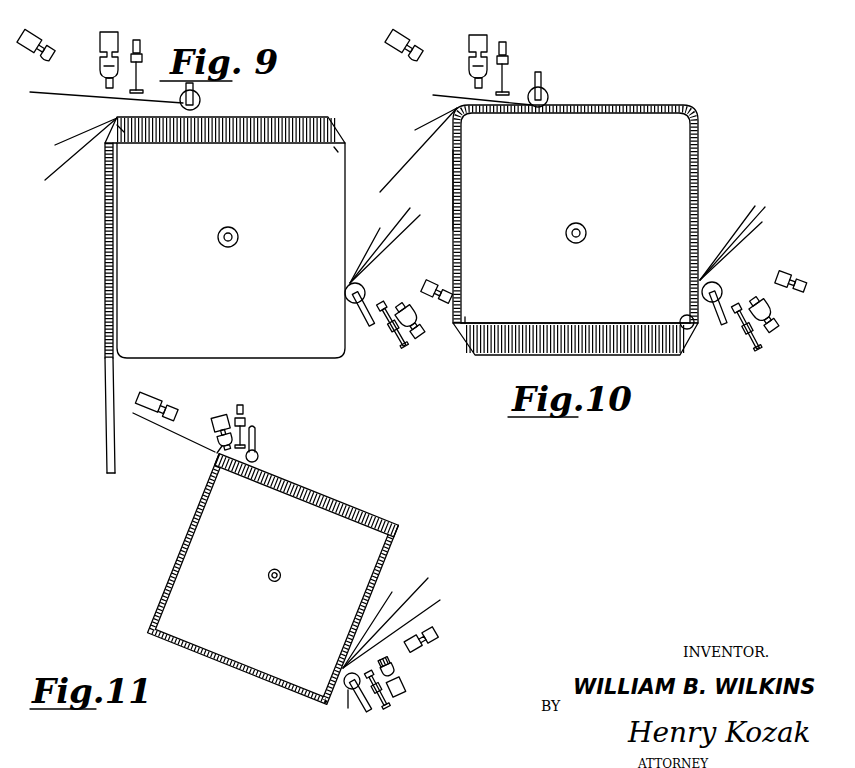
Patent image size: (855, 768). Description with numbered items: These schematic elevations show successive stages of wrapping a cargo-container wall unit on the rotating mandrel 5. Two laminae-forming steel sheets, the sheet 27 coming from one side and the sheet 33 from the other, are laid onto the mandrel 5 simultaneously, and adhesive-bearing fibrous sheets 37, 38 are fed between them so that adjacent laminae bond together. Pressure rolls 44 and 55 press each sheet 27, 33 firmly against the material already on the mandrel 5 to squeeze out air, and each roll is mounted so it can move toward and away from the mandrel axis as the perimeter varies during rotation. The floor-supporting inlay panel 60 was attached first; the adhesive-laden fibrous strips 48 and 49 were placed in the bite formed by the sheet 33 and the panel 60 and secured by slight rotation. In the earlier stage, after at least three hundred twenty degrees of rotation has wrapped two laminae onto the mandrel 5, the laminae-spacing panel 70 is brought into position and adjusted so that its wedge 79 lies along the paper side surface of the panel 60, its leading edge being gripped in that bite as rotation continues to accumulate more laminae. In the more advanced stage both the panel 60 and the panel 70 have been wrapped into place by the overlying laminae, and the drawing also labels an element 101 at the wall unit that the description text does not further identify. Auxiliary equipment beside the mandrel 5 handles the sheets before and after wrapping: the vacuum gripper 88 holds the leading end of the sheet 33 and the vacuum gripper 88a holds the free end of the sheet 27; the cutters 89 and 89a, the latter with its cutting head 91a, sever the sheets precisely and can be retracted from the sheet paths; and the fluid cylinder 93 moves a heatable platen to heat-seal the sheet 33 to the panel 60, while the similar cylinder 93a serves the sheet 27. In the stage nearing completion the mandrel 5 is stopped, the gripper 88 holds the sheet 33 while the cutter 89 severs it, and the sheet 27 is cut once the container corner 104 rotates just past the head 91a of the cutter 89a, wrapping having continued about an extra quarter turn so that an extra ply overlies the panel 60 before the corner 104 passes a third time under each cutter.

In FIG. 11, the mandrel 5 is at (263, 552).
In FIG. 9, the sheet 27 is at (410, 225).
In FIG. 10, the sheet 27 is at (762, 222).
In FIG. 11, the sheet 27 is at (440, 600).
In FIG. 9, the sheet 33 is at (68, 92).
In FIG. 10, the sheet 33 is at (455, 92).
In FIG. 9, the fibrous adhesive sheet 37 is at (380, 228).
In FIG. 10, the fibrous adhesive sheet 37 is at (755, 206).
In FIG. 11, the fibrous adhesive sheet 37 is at (392, 605).
In FIG. 9, the fibrous adhesive sheet 38 is at (410, 208).
In FIG. 10, the fibrous adhesive sheet 38 is at (765, 207).
In FIG. 11, the fibrous adhesive sheet 38 is at (432, 572).
In FIG. 11, the pressure roll 44 is at (350, 700).
In FIG. 9, the adhesive-laden fibrous strip 48 is at (70, 138).
In FIG. 10, the adhesive-laden fibrous strip 48 is at (430, 122).
In FIG. 9, the adhesive-laden fibrous strip 49 is at (50, 177).
In FIG. 10, the adhesive-laden fibrous strip 49 is at (420, 147).
In FIG. 11, the pressure roll 55 is at (258, 455).
In FIG. 10, the floor-supporting inlay panel 60 is at (503, 352).
In FIG. 11, the floor-supporting inlay panel 60 is at (317, 478).
In FIG. 9, the laminae-spacing panel 70 is at (107, 400).
In FIG. 10, the laminae-spacing panel 70 is at (453, 180).
In FIG. 11, the laminae-spacing panel 70 is at (258, 573).
In FIG. 9, the wedge block 79 is at (120, 128).
In FIG. 11, the vacuum gripper 88 is at (160, 398).
In FIG. 11, the vacuum gripper 88a is at (426, 652).
In FIG. 11, the cutter 89 is at (222, 416).
In FIG. 11, the cutter 89a is at (402, 686).
In FIG. 11, the cutting head 91a is at (392, 662).
In FIG. 11, the fluid cylinder 93 is at (242, 392).
In FIG. 11, the fluid cylinder 93a is at (385, 700).
In FIG. 9, the inner wall 101 is at (334, 147).
In FIG. 10, the inner wall 101 is at (469, 315).
In FIG. 10, the container corner 104 is at (694, 327).
In FIG. 11, the container corner 104 is at (215, 455).